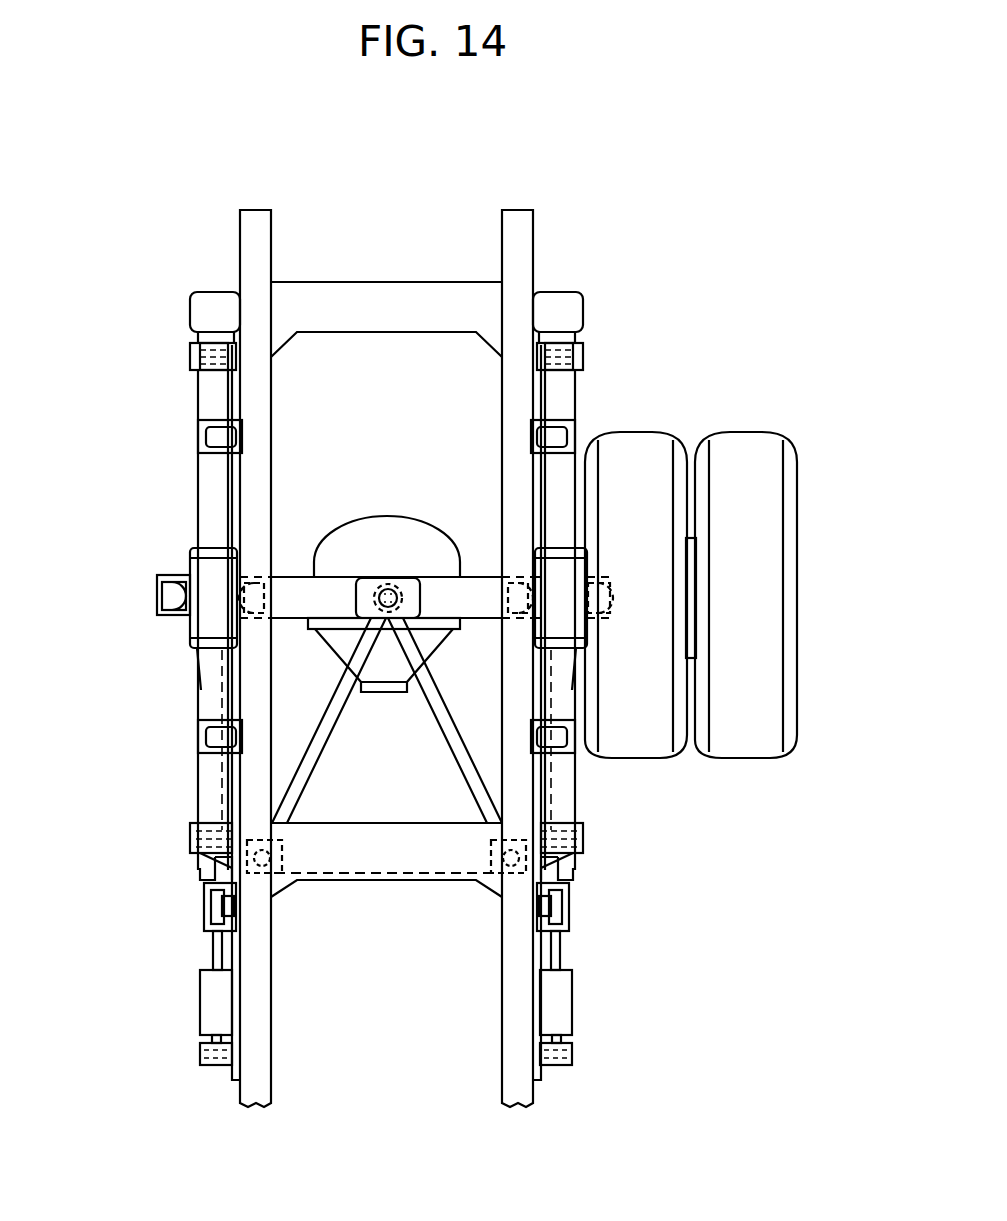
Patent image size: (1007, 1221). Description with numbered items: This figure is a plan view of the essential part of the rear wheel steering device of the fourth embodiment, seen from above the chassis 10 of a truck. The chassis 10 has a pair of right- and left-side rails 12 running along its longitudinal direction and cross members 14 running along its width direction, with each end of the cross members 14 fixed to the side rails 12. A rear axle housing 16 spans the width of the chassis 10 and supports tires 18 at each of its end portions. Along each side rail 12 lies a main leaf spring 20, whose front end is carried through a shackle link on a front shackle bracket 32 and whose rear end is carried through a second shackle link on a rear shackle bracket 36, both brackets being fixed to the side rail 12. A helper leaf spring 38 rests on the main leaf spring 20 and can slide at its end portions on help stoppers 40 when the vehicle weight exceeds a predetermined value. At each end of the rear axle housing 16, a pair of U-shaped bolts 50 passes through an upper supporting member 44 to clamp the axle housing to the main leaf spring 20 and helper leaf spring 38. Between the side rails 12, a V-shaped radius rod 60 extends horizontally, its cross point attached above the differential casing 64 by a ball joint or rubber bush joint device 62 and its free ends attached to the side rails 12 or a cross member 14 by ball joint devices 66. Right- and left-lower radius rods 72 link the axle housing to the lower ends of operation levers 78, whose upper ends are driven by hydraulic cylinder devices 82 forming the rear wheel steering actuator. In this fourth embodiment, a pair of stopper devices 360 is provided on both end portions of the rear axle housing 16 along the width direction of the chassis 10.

The chassis 10 is at (476, 186).
The side rails 12 is at (241, 213).
The cross members 14 is at (375, 300).
The rear axle housing 16 is at (480, 574).
The tires 18 is at (633, 452).
The main leaf spring 20 is at (580, 393).
The front shackle bracket 32 is at (560, 858).
The rear shackle bracket 36 is at (556, 300).
The helper leaf spring 38 is at (193, 490).
The help stoppers 40 is at (206, 437).
The upper supporting member 44 is at (196, 642).
The U-shaped bolts 50 is at (206, 548).
The radius rod 60 is at (330, 757).
The ball joint device or rubber bush joint device 62 is at (388, 568).
The differential casing 64 is at (353, 553).
The ball joint device 66 is at (282, 861).
The lower radius rods 72 is at (220, 812).
The operation lever 78 is at (220, 905).
The hydraulic cylinder device 82 is at (202, 1000).
The stopper devices 360 is at (160, 597).